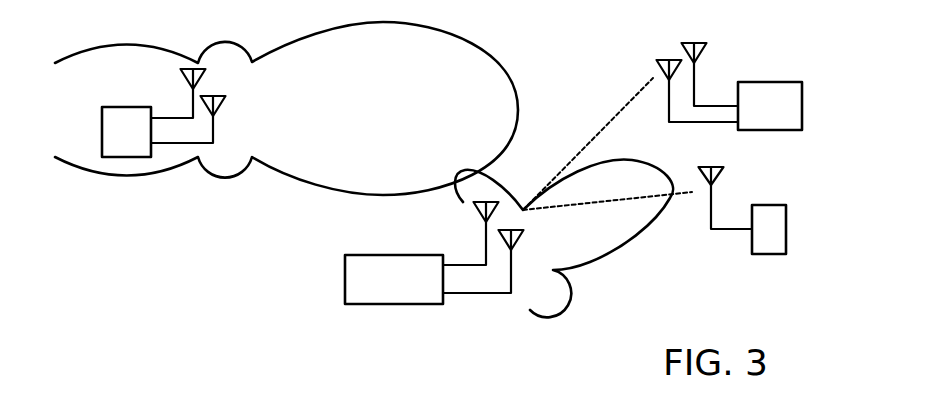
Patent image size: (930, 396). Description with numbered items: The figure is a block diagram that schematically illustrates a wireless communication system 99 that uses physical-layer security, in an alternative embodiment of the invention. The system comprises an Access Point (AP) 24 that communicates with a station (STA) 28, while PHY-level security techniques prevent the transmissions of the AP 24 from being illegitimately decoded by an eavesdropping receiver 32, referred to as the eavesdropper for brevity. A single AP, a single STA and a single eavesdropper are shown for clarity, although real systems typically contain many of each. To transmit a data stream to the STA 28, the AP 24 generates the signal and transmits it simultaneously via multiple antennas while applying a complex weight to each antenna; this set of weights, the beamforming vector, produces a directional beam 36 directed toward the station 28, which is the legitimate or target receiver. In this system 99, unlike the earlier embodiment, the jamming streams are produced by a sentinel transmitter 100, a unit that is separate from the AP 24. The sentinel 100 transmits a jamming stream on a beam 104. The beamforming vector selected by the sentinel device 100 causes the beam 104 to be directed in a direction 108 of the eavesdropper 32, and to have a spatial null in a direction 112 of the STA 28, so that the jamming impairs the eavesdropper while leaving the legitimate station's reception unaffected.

The access point 24 is at (102, 131).
The station 28 is at (768, 82).
The eavesdropping receiver 32 is at (769, 254).
The beam 36 is at (500, 52).
The wireless communication system 99 is at (168, 305).
The sentinel transmitter 100 is at (397, 304).
The beam 104 is at (596, 270).
The direction of eavesdropper 108 is at (653, 197).
The direction of STA 112 is at (629, 99).